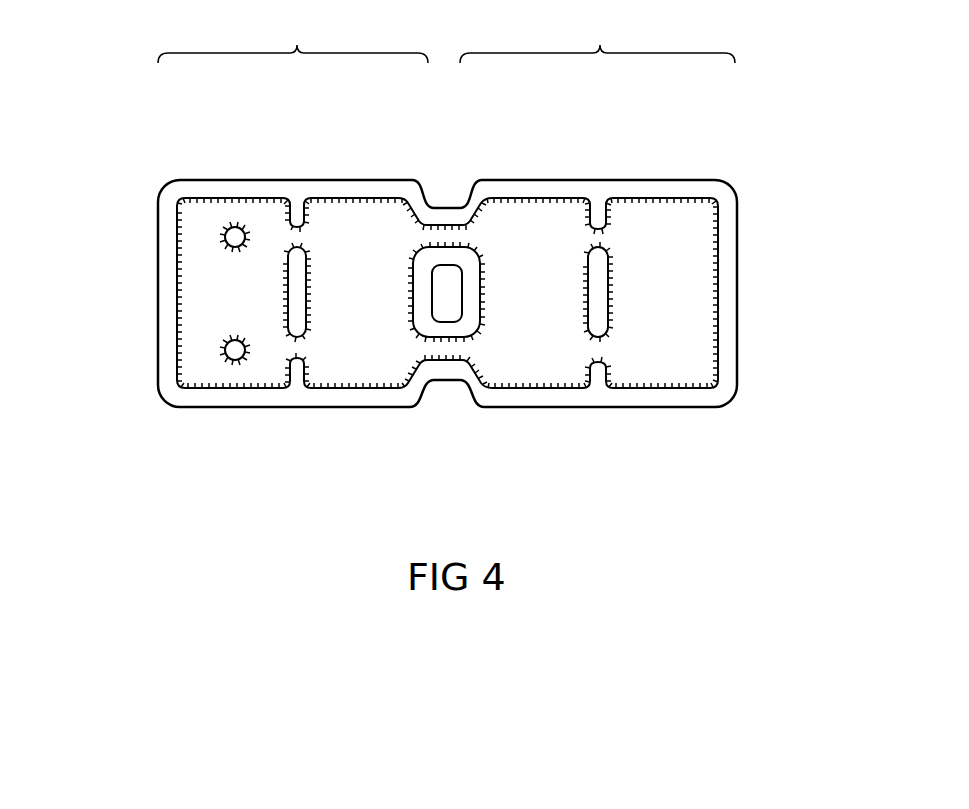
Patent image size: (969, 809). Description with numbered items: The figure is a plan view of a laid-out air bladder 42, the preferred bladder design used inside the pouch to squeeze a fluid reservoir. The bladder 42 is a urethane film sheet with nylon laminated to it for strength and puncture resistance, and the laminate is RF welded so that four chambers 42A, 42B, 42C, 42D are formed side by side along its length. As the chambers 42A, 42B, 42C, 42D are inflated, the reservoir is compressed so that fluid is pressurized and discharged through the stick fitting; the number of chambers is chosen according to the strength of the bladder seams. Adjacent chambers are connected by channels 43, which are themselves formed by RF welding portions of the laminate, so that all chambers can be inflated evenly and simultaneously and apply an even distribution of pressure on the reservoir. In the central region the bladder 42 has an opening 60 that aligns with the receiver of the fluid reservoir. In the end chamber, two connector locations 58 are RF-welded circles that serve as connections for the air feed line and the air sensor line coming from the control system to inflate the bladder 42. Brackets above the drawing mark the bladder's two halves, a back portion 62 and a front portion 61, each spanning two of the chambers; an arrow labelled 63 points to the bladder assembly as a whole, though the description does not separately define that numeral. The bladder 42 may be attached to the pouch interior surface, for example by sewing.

The air bladder 42 is at (450, 197).
The chamber 42A is at (200, 360).
The chamber 42B is at (322, 366).
The chamber 42C is at (525, 370).
The chamber 42D is at (690, 357).
The channel 43 is at (292, 245).
The connector location 58 is at (235, 350).
The opening 60 is at (445, 305).
The front portion 61 is at (597, 32).
The back portion 62 is at (293, 32).
The tray body 63 is at (137, 377).